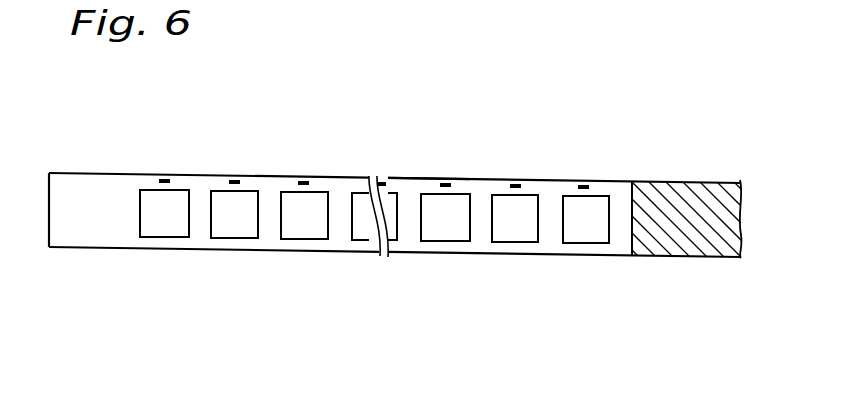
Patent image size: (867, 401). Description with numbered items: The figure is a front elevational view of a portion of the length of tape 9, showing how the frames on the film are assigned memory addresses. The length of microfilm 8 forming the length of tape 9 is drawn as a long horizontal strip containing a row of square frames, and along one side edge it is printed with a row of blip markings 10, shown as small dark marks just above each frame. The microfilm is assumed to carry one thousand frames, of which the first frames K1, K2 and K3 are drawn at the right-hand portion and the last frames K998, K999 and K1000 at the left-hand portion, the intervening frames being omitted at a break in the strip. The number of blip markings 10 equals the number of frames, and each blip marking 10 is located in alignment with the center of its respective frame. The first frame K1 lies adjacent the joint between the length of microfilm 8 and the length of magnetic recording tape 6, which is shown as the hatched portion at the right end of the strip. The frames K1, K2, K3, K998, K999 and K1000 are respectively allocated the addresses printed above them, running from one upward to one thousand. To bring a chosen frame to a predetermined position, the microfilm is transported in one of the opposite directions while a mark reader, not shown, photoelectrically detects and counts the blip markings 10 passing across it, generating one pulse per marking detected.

The length of magnetic recording tape 6 is at (720, 240).
The length of microfilm 8 is at (397, 185).
The length of tape 9 is at (654, 167).
The blip markings 10 is at (158, 181).
The frame K1000 is at (163, 229).
The frame K999 is at (237, 228).
The frame K998 is at (312, 229).
The frame K3 is at (448, 232).
The frame K2 is at (518, 232).
The frame K1 is at (585, 235).